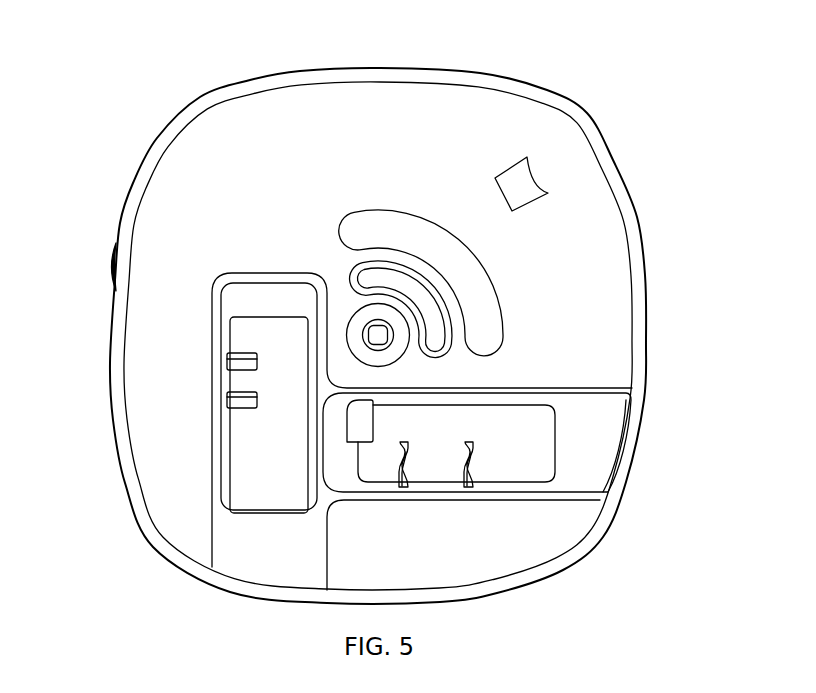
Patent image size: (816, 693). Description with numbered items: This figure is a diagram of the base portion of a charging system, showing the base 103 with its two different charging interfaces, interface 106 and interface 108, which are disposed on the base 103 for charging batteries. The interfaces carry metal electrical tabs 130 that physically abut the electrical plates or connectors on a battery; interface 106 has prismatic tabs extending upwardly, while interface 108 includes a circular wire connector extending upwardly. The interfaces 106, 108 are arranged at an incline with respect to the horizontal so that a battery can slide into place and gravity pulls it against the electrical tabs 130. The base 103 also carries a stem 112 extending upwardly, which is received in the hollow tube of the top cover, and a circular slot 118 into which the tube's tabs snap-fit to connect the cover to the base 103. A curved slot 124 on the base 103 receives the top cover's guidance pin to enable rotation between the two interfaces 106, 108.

The base 103 is at (156, 138).
The interface 106 is at (258, 500).
The interface 108 is at (508, 473).
The stem 112 is at (375, 331).
The circular slot 118 is at (383, 363).
The curved slot 124 is at (485, 279).
The metal electrical tabs 130 is at (242, 362).